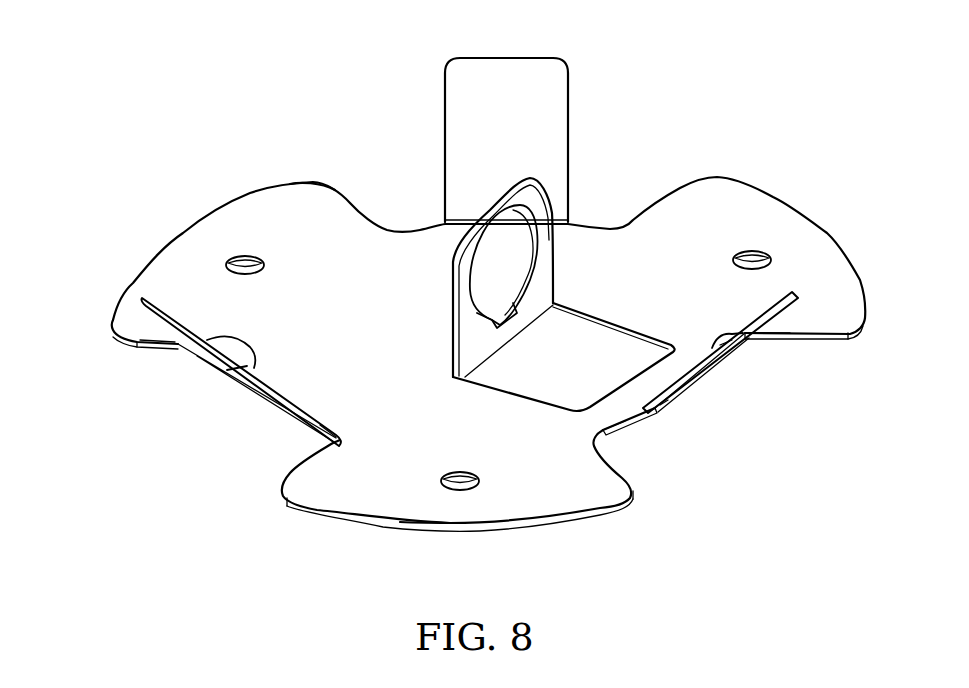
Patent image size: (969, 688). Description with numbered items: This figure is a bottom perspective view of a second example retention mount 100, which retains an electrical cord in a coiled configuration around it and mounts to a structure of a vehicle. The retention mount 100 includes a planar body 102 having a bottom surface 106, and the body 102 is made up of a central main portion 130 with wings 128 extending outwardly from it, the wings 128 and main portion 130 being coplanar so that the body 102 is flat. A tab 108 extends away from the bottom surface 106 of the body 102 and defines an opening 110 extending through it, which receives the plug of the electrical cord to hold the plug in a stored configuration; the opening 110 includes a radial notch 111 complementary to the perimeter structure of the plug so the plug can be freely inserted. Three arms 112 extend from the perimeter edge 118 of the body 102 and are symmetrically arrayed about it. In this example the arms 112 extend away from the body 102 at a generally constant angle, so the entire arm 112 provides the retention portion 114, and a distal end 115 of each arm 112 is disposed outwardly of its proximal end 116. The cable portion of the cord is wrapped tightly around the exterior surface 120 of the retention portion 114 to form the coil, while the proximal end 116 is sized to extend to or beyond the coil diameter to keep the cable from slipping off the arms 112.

The retention mount 100 is at (283, 115).
The body 102 is at (630, 240).
The bottom surface 106 is at (357, 440).
The tab 108 is at (540, 198).
The opening 110 is at (473, 292).
The radial notch 111 is at (520, 313).
The arm 112 is at (448, 92).
The retention portion 114 is at (557, 103).
The distal end 115 is at (507, 55).
The proximal end 116 is at (445, 221).
The perimeter edge 118 is at (613, 433).
The exterior surface 120 is at (720, 363).
The wing 128 is at (272, 200).
The main portion 130 is at (338, 252).